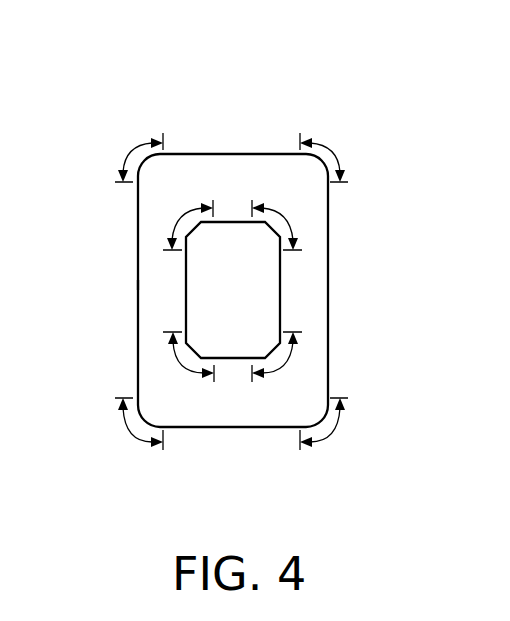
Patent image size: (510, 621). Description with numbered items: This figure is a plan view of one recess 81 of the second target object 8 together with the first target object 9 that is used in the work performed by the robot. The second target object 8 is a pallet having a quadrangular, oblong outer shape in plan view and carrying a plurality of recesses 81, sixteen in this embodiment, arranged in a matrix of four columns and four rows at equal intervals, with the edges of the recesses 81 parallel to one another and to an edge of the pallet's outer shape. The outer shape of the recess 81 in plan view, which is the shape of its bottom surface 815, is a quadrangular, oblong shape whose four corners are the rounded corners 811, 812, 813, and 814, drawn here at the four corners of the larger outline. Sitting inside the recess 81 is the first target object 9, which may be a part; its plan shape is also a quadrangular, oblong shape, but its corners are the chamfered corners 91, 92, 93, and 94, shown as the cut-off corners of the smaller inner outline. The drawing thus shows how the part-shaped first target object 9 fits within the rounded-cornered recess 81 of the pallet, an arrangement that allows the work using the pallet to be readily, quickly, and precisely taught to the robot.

The second target object 8 is at (340, 124).
The recess 81 is at (328, 200).
The rounded corner 811 is at (130, 146).
The rounded corner 812 is at (333, 148).
The rounded corner 813 is at (333, 438).
The rounded corner 814 is at (134, 438).
The bottom surface 815 is at (152, 284).
The first target object 9 is at (288, 275).
The chamfered corner 91 is at (182, 218).
The chamfered corner 92 is at (287, 218).
The chamfered corner 93 is at (287, 363).
The chamfered corner 94 is at (184, 366).